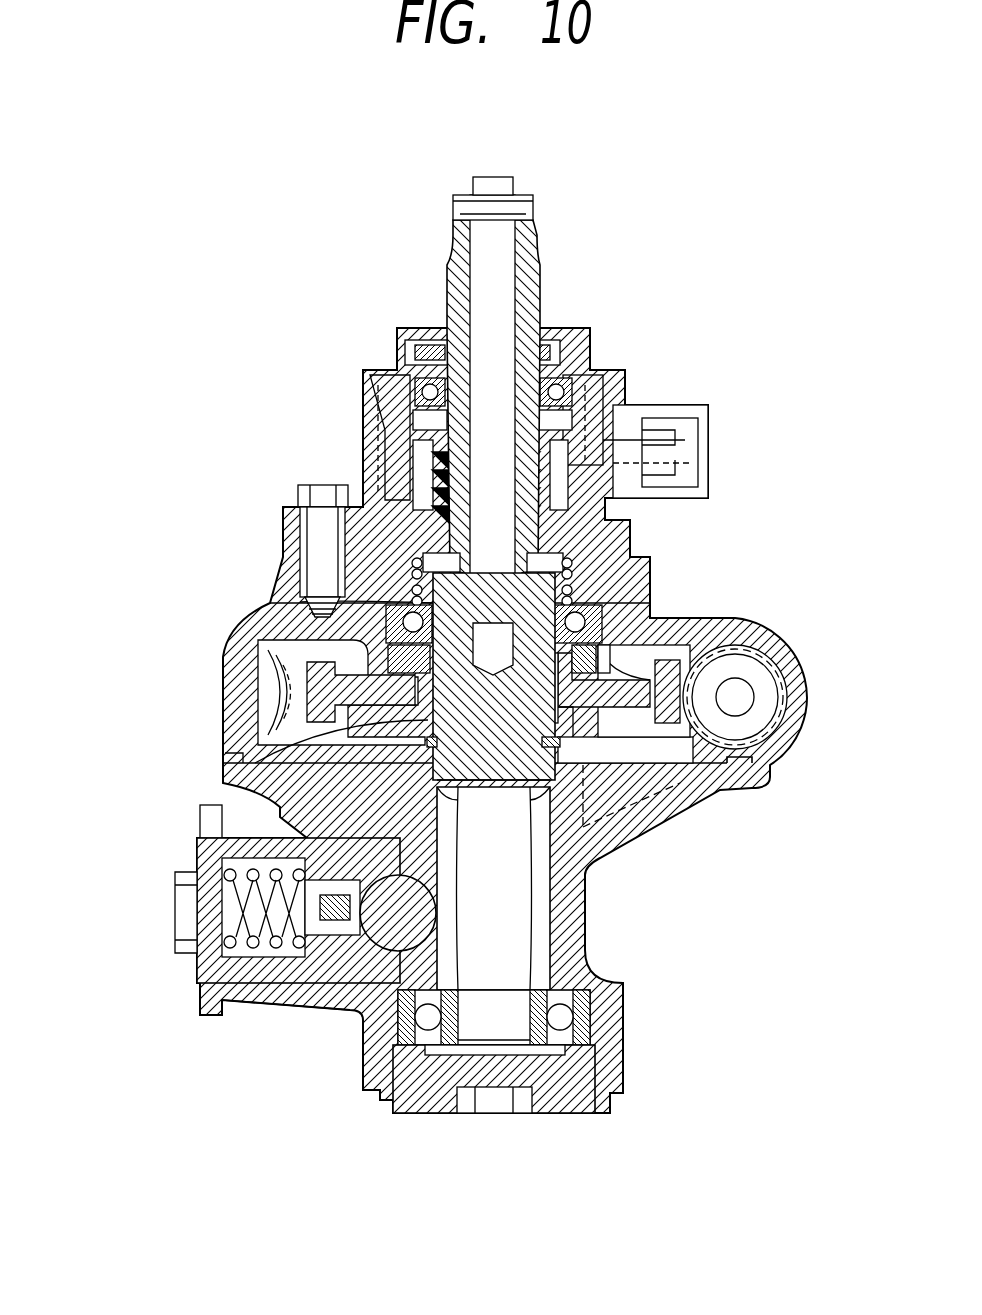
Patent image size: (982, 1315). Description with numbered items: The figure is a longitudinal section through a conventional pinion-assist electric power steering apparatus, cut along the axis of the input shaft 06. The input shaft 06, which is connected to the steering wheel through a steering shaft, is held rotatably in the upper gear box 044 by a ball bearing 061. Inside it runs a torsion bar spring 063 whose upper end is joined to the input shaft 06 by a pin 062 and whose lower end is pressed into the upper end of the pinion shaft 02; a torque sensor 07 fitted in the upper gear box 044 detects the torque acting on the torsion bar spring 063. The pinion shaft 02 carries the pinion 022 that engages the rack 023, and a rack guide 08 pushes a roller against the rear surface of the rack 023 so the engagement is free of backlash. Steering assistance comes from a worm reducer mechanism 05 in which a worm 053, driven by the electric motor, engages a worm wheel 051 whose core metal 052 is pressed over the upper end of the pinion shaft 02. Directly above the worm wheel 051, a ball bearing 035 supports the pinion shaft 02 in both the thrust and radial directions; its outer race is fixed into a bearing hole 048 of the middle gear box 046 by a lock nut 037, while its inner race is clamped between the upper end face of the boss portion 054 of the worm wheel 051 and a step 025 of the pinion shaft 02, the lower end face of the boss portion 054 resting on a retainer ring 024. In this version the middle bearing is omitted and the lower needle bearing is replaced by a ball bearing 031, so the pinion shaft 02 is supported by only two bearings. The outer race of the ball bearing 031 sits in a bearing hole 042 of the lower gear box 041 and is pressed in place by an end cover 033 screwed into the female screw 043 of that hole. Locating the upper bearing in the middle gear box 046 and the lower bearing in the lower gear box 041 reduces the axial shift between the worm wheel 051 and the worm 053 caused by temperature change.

The pin 062 is at (495, 210).
The torsion bar spring 063 is at (490, 291).
The input shaft 06 is at (530, 285).
The ball bearing 061 is at (405, 388).
The upper gear box 044 is at (385, 432).
The torque sensor 07 is at (420, 466).
The middle gear box 046 is at (298, 603).
The step 025 is at (305, 615).
The bearing hole 048 is at (388, 655).
The boss portion 054 is at (255, 763).
The retainer ring 024 is at (200, 822).
The rack guide 08 is at (160, 933).
The lower gear box 041 is at (258, 990).
The bearing hole 042 is at (397, 1017).
The female screw 043 is at (375, 1063).
The end cover 033 is at (452, 1113).
The pinion shaft 02 is at (483, 788).
The rack 023 is at (410, 905).
The pinion 022 is at (545, 925).
The ball bearing 031 is at (560, 1020).
The ball bearing 035 is at (640, 588).
The lock nut 037 is at (700, 624).
The worm reducer mechanism 05 is at (772, 647).
The worm 053 is at (740, 697).
The worm wheel 051 is at (687, 730).
The core metal 052 is at (617, 690).